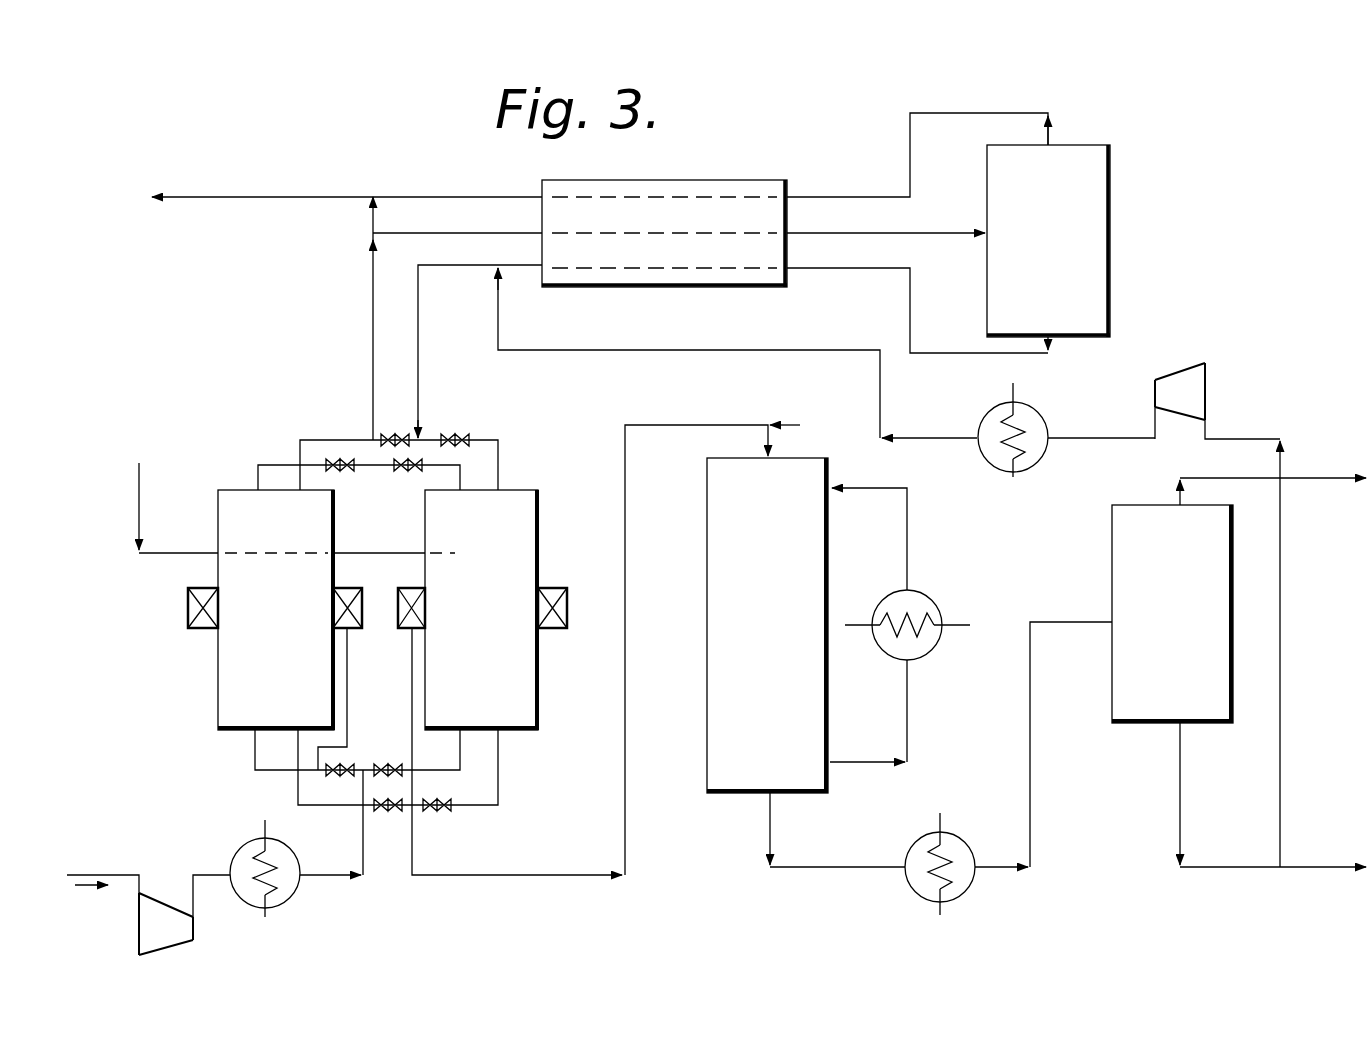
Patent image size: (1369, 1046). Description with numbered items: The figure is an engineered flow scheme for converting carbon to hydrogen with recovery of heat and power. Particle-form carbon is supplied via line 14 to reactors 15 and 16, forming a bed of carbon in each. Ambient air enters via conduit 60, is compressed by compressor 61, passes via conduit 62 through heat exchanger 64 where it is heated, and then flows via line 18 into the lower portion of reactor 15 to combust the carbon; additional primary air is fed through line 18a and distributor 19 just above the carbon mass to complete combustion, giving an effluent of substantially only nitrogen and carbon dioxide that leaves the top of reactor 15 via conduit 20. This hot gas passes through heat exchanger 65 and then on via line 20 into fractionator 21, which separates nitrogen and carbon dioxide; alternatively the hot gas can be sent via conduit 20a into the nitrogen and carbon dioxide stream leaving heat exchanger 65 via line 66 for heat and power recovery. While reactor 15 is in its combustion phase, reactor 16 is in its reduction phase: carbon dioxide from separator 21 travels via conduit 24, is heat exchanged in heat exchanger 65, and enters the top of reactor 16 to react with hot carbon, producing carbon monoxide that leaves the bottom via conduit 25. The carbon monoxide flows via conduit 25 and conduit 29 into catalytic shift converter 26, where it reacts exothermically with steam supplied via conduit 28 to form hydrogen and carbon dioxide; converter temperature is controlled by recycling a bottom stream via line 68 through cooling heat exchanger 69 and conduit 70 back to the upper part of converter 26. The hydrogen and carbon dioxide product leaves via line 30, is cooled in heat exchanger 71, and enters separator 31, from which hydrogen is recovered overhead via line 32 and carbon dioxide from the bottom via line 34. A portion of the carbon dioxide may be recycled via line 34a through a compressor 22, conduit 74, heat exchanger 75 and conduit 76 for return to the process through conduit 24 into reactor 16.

The line 14 is at (139, 492).
The reactor 15 is at (218, 525).
The reactor 16 is at (530, 542).
The line 18 is at (255, 757).
The line 18a is at (348, 694).
The distributor 19 is at (188, 622).
The conduit 20 is at (422, 237).
The conduit 20a is at (373, 222).
The fractionator 21 is at (1100, 243).
The compressor 22 is at (1195, 393).
The conduit 24 is at (447, 282).
The conduit 25 is at (500, 774).
The catalytic shift converter 26 is at (707, 546).
The conduit 28 is at (787, 422).
The conduit 29 is at (768, 440).
The line 30 is at (770, 823).
The separator 31 is at (1112, 580).
The line 32 is at (1180, 482).
The line 34 is at (1180, 794).
The line 34a is at (1282, 670).
The conduit 60 is at (76, 858).
The compressor 61 is at (183, 930).
The conduit 62 is at (213, 875).
The heat exchanger 64 is at (278, 898).
The heat exchanger 65 is at (628, 290).
The line 66 is at (440, 197).
The line 68 is at (880, 740).
The cooling heat exchanger 69 is at (930, 600).
The conduit 70 is at (908, 550).
The heat exchanger 71 is at (960, 840).
The conduit 74 is at (1108, 438).
The heat exchanger 75 is at (990, 415).
The conduit 76 is at (916, 440).